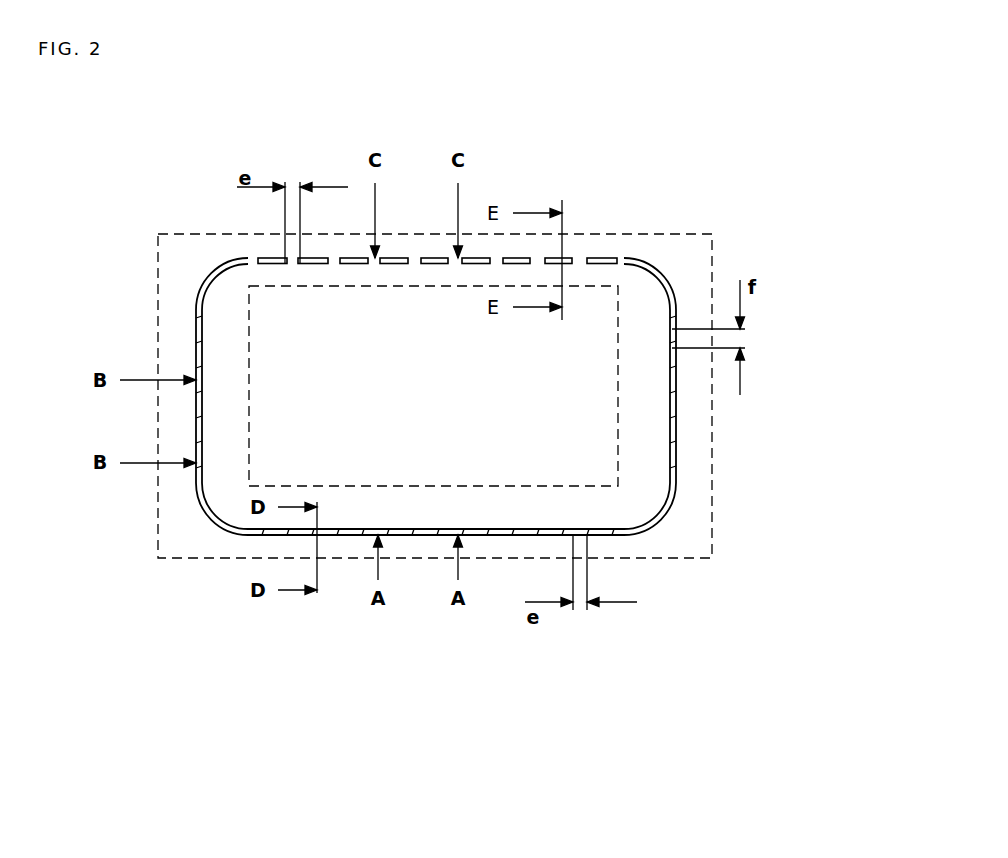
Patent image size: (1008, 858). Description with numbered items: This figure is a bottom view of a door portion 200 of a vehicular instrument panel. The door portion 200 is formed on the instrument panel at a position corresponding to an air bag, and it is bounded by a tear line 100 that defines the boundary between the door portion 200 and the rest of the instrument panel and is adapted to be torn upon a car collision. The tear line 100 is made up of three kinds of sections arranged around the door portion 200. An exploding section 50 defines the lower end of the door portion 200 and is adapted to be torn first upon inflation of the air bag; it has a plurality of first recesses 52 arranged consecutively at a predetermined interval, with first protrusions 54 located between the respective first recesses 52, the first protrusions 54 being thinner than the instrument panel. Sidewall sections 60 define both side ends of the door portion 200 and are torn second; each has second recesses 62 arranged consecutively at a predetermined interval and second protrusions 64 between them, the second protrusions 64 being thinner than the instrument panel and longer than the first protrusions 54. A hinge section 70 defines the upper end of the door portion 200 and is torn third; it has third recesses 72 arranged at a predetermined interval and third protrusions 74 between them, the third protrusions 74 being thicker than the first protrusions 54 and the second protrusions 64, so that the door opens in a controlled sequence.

The exploding section 50 is at (606, 543).
The first recesses 52 is at (480, 535).
The first protrusions 54 is at (497, 535).
The sidewall sections 60 is at (678, 425).
The second recesses 62 is at (199, 360).
The second protrusions 64 is at (196, 330).
The hinge section 70 is at (602, 252).
The third recesses 72 is at (573, 257).
The third protrusions 74 is at (582, 257).
The tear line 100 is at (822, 292).
The door portion 200 is at (288, 340).